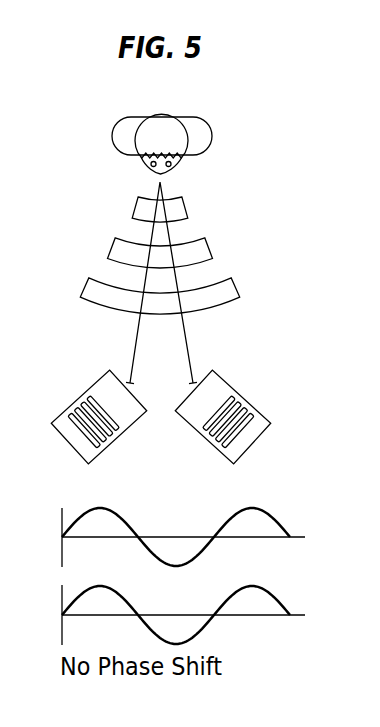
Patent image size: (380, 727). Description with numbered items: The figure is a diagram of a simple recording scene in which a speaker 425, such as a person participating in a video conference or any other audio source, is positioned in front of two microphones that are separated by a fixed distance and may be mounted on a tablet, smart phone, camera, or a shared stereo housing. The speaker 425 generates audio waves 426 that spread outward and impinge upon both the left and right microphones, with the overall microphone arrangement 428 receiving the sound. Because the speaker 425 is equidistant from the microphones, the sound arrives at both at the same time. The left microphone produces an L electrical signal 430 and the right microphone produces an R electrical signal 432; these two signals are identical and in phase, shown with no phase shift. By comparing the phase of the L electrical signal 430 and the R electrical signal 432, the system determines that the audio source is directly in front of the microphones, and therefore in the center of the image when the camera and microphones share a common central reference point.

The speaker 425 is at (119, 131).
The sound waves 426 is at (113, 249).
The microphone array arrangement 428 is at (253, 340).
The L electrical signal 430 is at (276, 519).
The R electrical signal 432 is at (282, 603).